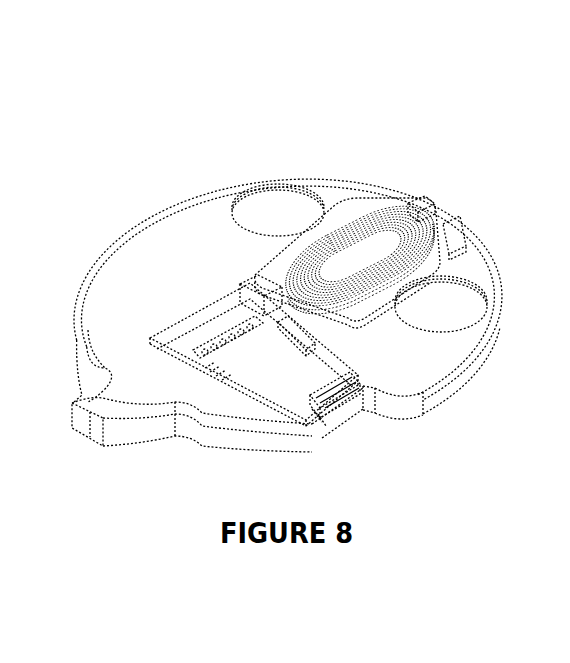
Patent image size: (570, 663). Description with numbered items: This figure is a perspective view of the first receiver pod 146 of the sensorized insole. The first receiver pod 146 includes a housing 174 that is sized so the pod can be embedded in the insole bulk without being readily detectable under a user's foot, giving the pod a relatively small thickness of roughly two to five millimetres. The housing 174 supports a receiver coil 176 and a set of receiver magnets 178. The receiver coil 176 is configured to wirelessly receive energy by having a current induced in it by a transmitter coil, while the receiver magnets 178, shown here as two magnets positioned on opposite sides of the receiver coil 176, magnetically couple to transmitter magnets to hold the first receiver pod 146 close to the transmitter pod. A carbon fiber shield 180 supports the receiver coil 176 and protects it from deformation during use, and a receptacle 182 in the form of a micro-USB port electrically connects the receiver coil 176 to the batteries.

The first receiver pod 146 is at (257, 108).
The housing 174 is at (442, 392).
The receiver coil 176 is at (387, 217).
The receiver magnets 178 is at (267, 205).
The carbon fiber shield 180 is at (445, 243).
The receptacle 182 is at (332, 412).